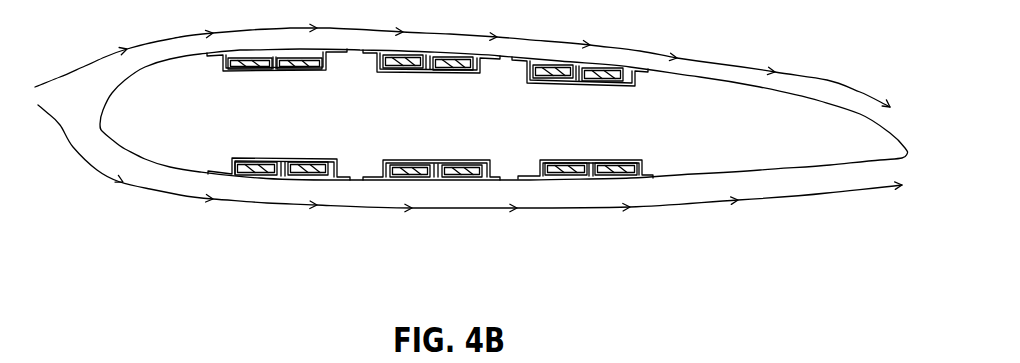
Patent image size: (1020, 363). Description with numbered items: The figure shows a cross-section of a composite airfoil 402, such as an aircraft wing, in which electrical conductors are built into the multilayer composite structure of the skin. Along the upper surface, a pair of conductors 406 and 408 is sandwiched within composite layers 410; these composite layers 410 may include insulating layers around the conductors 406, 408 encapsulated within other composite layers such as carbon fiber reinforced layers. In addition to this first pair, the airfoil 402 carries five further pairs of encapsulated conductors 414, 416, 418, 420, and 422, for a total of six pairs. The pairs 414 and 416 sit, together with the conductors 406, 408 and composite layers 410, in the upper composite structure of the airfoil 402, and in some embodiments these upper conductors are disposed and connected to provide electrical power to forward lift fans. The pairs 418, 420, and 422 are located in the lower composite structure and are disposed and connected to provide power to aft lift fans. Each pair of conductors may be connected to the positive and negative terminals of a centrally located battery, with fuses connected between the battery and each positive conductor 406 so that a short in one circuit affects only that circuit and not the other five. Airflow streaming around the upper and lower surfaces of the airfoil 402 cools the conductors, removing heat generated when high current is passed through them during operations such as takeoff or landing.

The airfoil 402 is at (722, 88).
The conductor 406 is at (250, 62).
The conductor 408 is at (306, 66).
The composite layers 410 is at (224, 62).
The pair of encapsulated conductors 414 is at (460, 78).
The pair of encapsulated conductors 416 is at (643, 87).
The pair of encapsulated conductors 418 is at (537, 156).
The pair of encapsulated conductors 420 is at (377, 163).
The pair of encapsulated conductors 422 is at (335, 158).